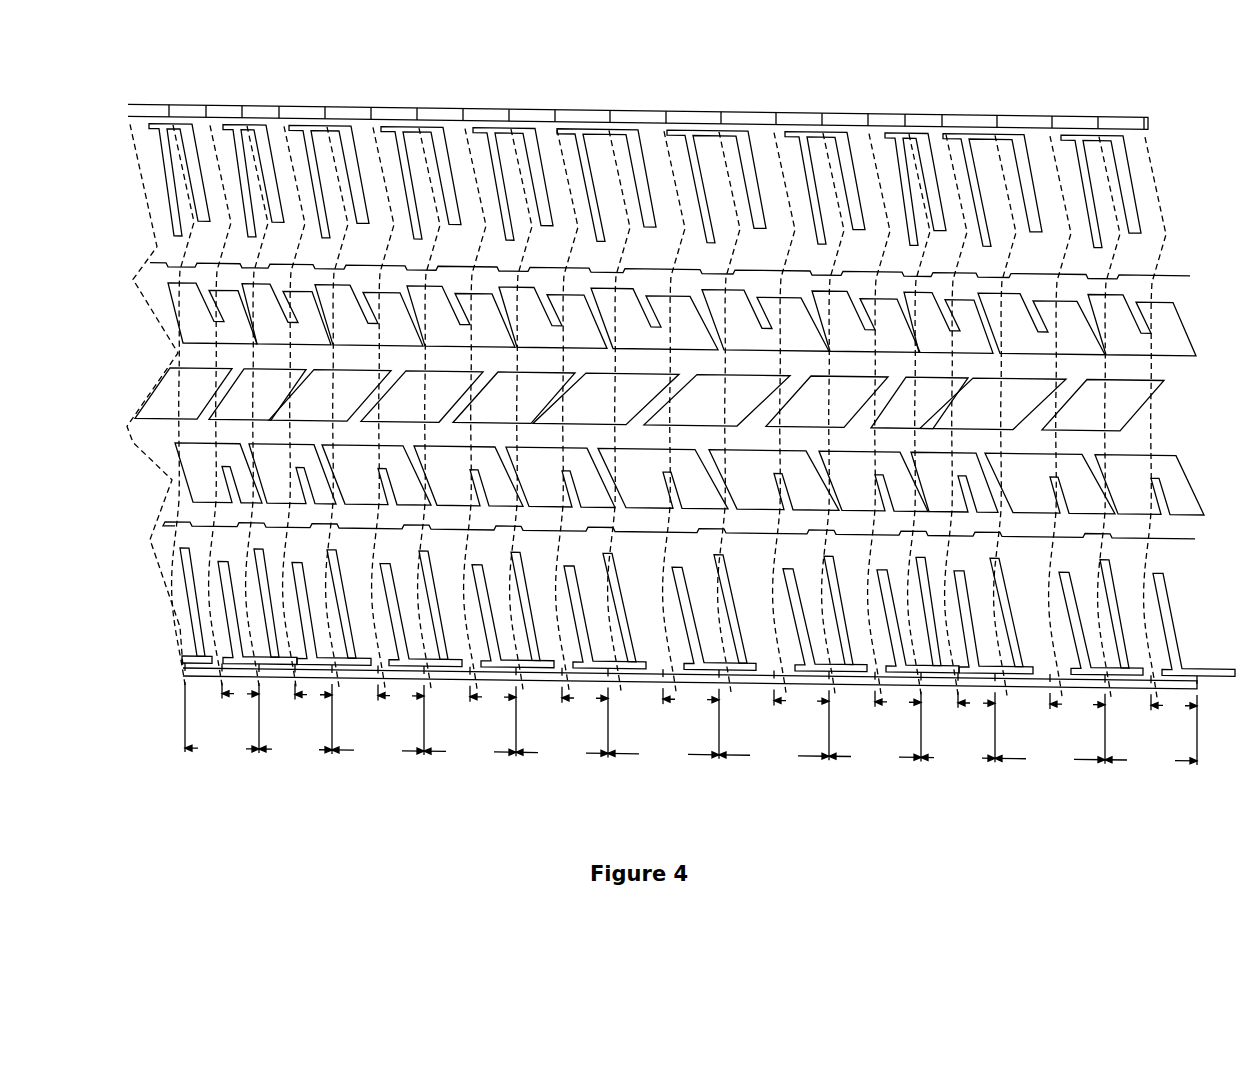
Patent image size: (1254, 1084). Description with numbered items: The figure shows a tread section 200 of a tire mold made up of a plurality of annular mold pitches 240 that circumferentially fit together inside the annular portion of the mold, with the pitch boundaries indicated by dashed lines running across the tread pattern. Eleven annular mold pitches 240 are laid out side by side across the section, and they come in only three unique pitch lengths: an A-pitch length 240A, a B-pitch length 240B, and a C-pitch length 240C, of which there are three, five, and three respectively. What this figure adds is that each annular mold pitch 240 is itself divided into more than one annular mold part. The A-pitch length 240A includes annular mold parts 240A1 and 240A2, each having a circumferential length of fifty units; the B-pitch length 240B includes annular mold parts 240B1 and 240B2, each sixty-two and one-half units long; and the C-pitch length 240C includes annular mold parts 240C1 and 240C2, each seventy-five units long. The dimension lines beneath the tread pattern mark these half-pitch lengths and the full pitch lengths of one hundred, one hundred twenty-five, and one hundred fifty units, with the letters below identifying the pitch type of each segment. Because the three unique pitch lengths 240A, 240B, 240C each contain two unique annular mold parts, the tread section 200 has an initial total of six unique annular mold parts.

The tread section 200 is at (668, 466).
The annular mold pitches 240 is at (299, 107).
The A-pitch length 240A is at (172, 137).
The B-pitch length 240B is at (521, 160).
The C-pitch length 240C is at (1002, 150).
The annular mold part 240A1 is at (190, 674).
The annular mold part 240A2 is at (240, 676).
The annular mold part 240B1 is at (530, 676).
The annular mold part 240B2 is at (580, 676).
The annular mold part 240C1 is at (1000, 682).
The annular mold part 240C2 is at (1068, 682).